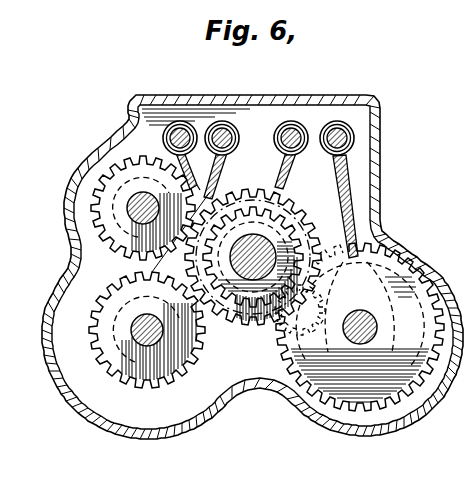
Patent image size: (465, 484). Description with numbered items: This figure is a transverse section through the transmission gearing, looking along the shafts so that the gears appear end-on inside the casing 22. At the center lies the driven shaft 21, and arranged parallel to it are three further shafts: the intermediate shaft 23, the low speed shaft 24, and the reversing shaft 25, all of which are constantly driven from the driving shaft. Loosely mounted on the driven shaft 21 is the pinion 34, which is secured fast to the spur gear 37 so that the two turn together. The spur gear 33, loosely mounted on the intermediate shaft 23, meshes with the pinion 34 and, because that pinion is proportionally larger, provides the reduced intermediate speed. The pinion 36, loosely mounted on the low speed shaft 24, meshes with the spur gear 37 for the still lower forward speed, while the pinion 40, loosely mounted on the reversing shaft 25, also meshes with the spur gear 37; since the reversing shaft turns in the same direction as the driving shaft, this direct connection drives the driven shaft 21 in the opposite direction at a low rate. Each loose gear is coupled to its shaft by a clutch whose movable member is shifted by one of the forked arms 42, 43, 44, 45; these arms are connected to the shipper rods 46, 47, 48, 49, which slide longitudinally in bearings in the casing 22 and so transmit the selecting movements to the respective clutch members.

The driven shaft 21 is at (257, 262).
The casing 22 is at (104, 147).
The intermediate shaft 23 is at (360, 327).
The low speed shaft 24 is at (131, 340).
The reversing shaft 25 is at (133, 214).
The spur gear 33 is at (300, 317).
The pinion 34 is at (253, 264).
The pinion 36 is at (147, 330).
The spur gear 37 is at (253, 255).
The pinion 40 is at (143, 208).
The forked arm 42 is at (290, 171).
The forked arm 43 is at (355, 192).
The forked arm 44 is at (222, 175).
The forked arm 45 is at (175, 160).
The shipper rod 46 is at (302, 129).
The shipper rod 47 is at (354, 137).
The shipper rod 48 is at (233, 130).
The shipper rod 49 is at (182, 123).